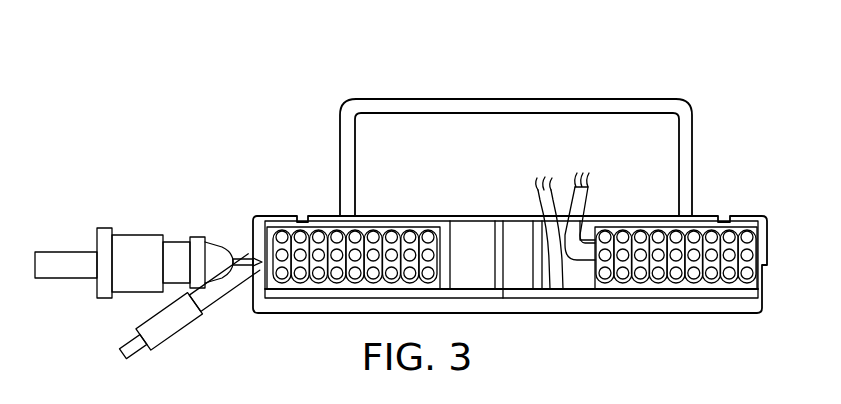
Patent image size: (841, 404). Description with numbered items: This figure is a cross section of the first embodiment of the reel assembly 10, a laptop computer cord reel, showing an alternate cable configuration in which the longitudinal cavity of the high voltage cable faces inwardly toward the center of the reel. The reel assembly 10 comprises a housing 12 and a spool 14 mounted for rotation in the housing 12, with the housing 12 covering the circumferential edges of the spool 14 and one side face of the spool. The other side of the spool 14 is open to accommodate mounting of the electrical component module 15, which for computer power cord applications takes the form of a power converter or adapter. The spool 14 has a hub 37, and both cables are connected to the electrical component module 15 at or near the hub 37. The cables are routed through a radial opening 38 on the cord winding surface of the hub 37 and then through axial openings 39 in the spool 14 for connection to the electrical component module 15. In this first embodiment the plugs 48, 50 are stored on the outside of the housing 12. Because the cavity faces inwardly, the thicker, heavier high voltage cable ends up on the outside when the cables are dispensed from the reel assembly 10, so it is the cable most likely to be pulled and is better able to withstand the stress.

The reel assembly 10 is at (224, 186).
The housing 12 is at (741, 305).
The spool 14 is at (652, 292).
The electrical component module 15 is at (572, 137).
The hub 37 is at (472, 217).
The radial opening 38 is at (566, 298).
The axial openings 39 is at (585, 222).
The plug 48 is at (150, 242).
The plug 50 is at (160, 330).